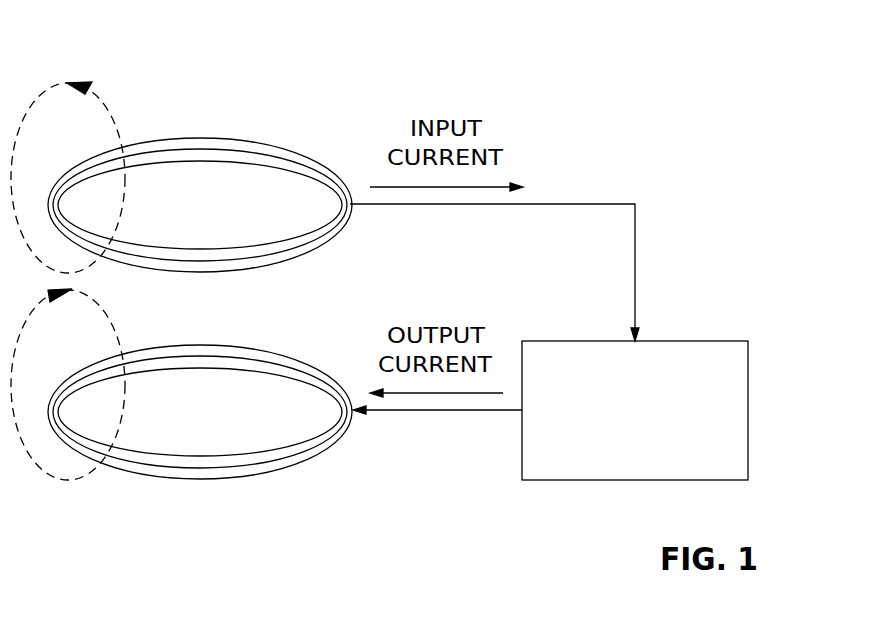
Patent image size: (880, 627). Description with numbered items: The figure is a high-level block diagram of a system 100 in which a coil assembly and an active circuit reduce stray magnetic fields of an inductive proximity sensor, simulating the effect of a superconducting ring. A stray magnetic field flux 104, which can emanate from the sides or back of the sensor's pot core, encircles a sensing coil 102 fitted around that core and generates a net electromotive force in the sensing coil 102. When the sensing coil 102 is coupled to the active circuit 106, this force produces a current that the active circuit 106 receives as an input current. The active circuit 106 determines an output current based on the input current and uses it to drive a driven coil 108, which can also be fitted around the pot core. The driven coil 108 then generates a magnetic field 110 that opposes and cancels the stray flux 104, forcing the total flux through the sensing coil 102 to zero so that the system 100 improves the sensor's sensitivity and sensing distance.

The system 100 is at (657, 57).
The sensing coil 102 is at (245, 140).
The stray magnetic field flux 104 is at (107, 108).
The active circuit 106 is at (712, 341).
The driven coil 108 is at (245, 347).
The magnetic field 110 is at (118, 345).